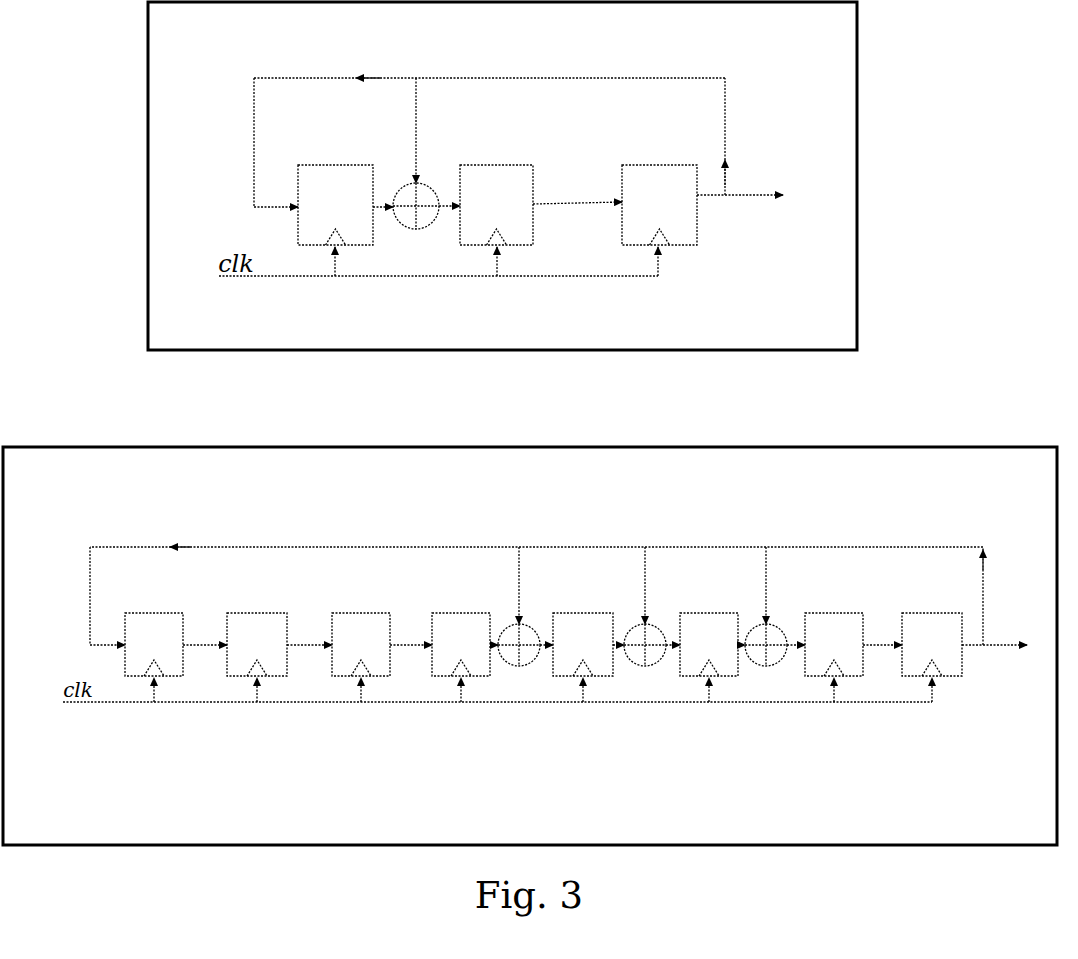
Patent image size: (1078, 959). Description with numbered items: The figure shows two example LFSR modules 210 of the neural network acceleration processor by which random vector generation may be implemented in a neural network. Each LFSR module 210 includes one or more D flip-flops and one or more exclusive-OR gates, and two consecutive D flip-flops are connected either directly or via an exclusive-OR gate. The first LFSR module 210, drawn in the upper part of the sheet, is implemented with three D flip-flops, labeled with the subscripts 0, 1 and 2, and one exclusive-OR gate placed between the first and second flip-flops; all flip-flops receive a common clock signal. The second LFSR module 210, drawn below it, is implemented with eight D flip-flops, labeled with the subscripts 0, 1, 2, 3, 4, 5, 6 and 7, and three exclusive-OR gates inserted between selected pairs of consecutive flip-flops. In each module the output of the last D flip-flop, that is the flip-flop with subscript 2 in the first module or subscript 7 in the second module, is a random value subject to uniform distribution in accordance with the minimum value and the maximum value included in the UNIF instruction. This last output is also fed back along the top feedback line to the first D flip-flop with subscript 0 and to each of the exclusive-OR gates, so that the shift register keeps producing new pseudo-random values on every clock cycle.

The LFSR module 210 is at (530, 423).
The D flip-flop D0 0 is at (249, 420).
The D flip-flop D1 1 is at (380, 420).
The D flip-flop D2 2 is at (514, 420).
The D flip-flop D3 3 is at (461, 644).
The D flip-flop D4 4 is at (583, 644).
The D flip-flop D5 5 is at (709, 644).
The D flip-flop D6 6 is at (834, 644).
The D flip-flop D7 7 is at (932, 644).